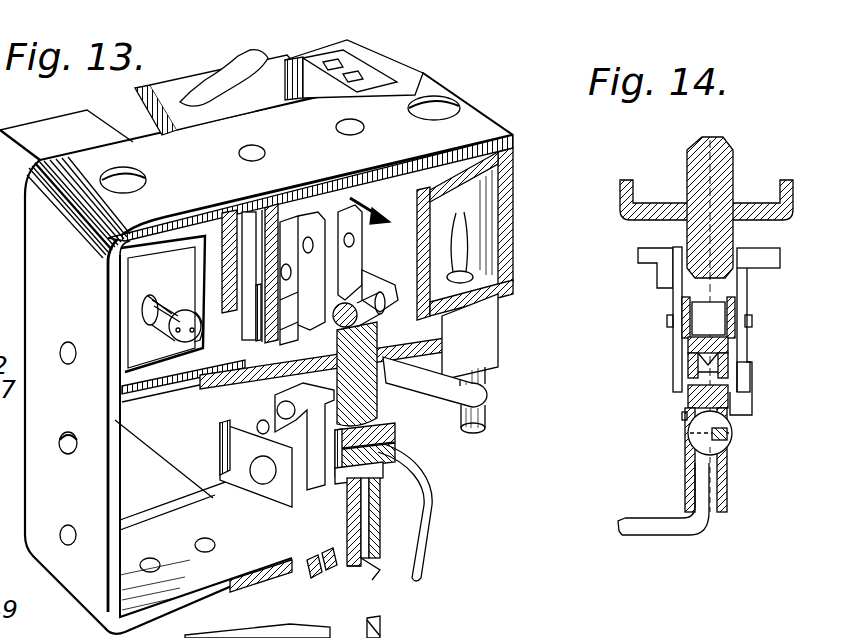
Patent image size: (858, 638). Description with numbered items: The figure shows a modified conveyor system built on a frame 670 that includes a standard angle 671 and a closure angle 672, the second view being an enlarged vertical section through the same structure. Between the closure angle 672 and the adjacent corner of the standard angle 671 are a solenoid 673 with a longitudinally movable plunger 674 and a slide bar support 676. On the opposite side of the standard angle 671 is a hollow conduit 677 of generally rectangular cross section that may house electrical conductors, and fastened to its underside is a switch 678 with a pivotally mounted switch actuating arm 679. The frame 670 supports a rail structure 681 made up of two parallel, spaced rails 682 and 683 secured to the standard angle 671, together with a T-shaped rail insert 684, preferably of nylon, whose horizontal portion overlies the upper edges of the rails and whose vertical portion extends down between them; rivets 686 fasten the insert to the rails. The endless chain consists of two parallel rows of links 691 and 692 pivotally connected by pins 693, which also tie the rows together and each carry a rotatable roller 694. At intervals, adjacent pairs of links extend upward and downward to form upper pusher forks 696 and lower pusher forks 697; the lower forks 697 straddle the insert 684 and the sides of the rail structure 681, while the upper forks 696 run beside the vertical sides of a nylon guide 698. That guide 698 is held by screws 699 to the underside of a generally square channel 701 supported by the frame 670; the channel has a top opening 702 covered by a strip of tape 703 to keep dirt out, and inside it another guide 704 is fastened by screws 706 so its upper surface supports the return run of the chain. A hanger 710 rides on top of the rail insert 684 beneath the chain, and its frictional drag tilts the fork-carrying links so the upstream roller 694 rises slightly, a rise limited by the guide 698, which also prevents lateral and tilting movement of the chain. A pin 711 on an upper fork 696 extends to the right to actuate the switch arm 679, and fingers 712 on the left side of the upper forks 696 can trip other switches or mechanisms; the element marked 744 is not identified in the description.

In FIG. 13, the frame 670 is at (494, 104).
In FIG. 13, the standard angle 671 is at (302, 607).
In FIG. 14, the standard angle 671 is at (657, 484).
In FIG. 13, the closure angle 672 is at (123, 460).
In FIG. 13, the solenoid 673 is at (47, 133).
In FIG. 13, the plunger 674 is at (158, 293).
In FIG. 13, the slide bar support 676 is at (214, 226).
In FIG. 13, the hollow conduit 677 is at (505, 212).
In FIG. 13, the switch 678 is at (493, 312).
In FIG. 13, the switch actuating arm 679 is at (487, 415).
In FIG. 13, the rail structure 681 is at (392, 522).
In FIG. 13, the rail 682 is at (336, 569).
In FIG. 13, the rail 683 is at (374, 553).
In FIG. 13, the T-shaped rail insert 684 is at (386, 505).
In FIG. 14, the T-shaped rail insert 684 is at (727, 357).
In FIG. 13, the rivets 686 is at (338, 568).
In FIG. 13, the links 691 is at (302, 280).
In FIG. 14, the links 691 is at (680, 326).
In FIG. 13, the links 692 is at (362, 241).
In FIG. 14, the links 692 is at (728, 342).
In FIG. 13, the pins 693 is at (286, 220).
In FIG. 14, the pins 693 is at (744, 322).
In FIG. 13, the roller 694 is at (360, 270).
In FIG. 14, the roller 694 is at (714, 318).
In FIG. 13, the upper pusher forks 696 is at (290, 424).
In FIG. 14, the upper pusher forks 696 is at (744, 244).
In FIG. 13, the lower pusher forks 697 is at (254, 496).
In FIG. 14, the lower pusher forks 697 is at (747, 377).
In FIG. 13, the guide 698 is at (431, 350).
In FIG. 14, the guide 698 is at (746, 258).
In FIG. 14, the screws 699 is at (682, 228).
In FIG. 13, the channel 701 is at (391, 188).
In FIG. 14, the channel 701 is at (795, 195).
In FIG. 13, the opening 702 is at (276, 72).
In FIG. 13, the tape 703 is at (190, 87).
In FIG. 13, the guide 704 is at (336, 361).
In FIG. 14, the guide 704 is at (733, 180).
In FIG. 14, the screws 706 is at (734, 188).
In FIG. 13, the hanger 710 is at (416, 567).
In FIG. 13, the pin 711 is at (378, 387).
In FIG. 14, the pin 711 is at (760, 270).
In FIG. 13, the fingers 712 is at (292, 394).
In FIG. 14, the fingers 712 is at (656, 268).
In FIG. 13, the base member 744 is at (386, 625).